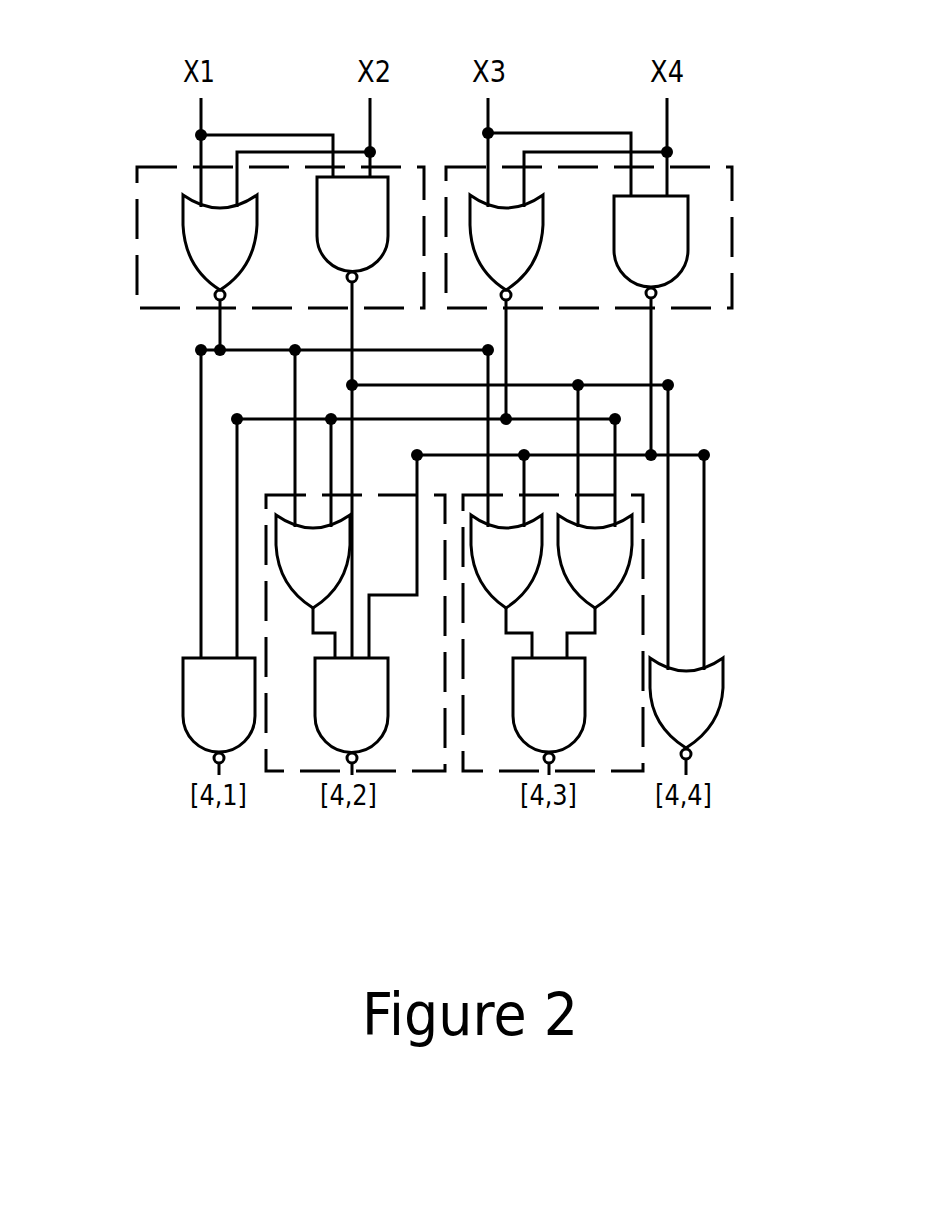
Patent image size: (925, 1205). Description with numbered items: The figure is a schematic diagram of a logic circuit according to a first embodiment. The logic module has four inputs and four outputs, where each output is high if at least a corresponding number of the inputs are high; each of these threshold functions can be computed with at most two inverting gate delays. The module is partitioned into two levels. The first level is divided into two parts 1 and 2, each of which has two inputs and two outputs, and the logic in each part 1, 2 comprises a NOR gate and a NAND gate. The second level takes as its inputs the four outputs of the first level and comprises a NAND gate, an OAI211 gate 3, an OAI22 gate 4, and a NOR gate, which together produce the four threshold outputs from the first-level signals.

The first part of first level 1 is at (137, 183).
The second part of first level 2 is at (732, 200).
The OAI211 gate 3 is at (432, 771).
The OAI22 gate 4 is at (608, 771).